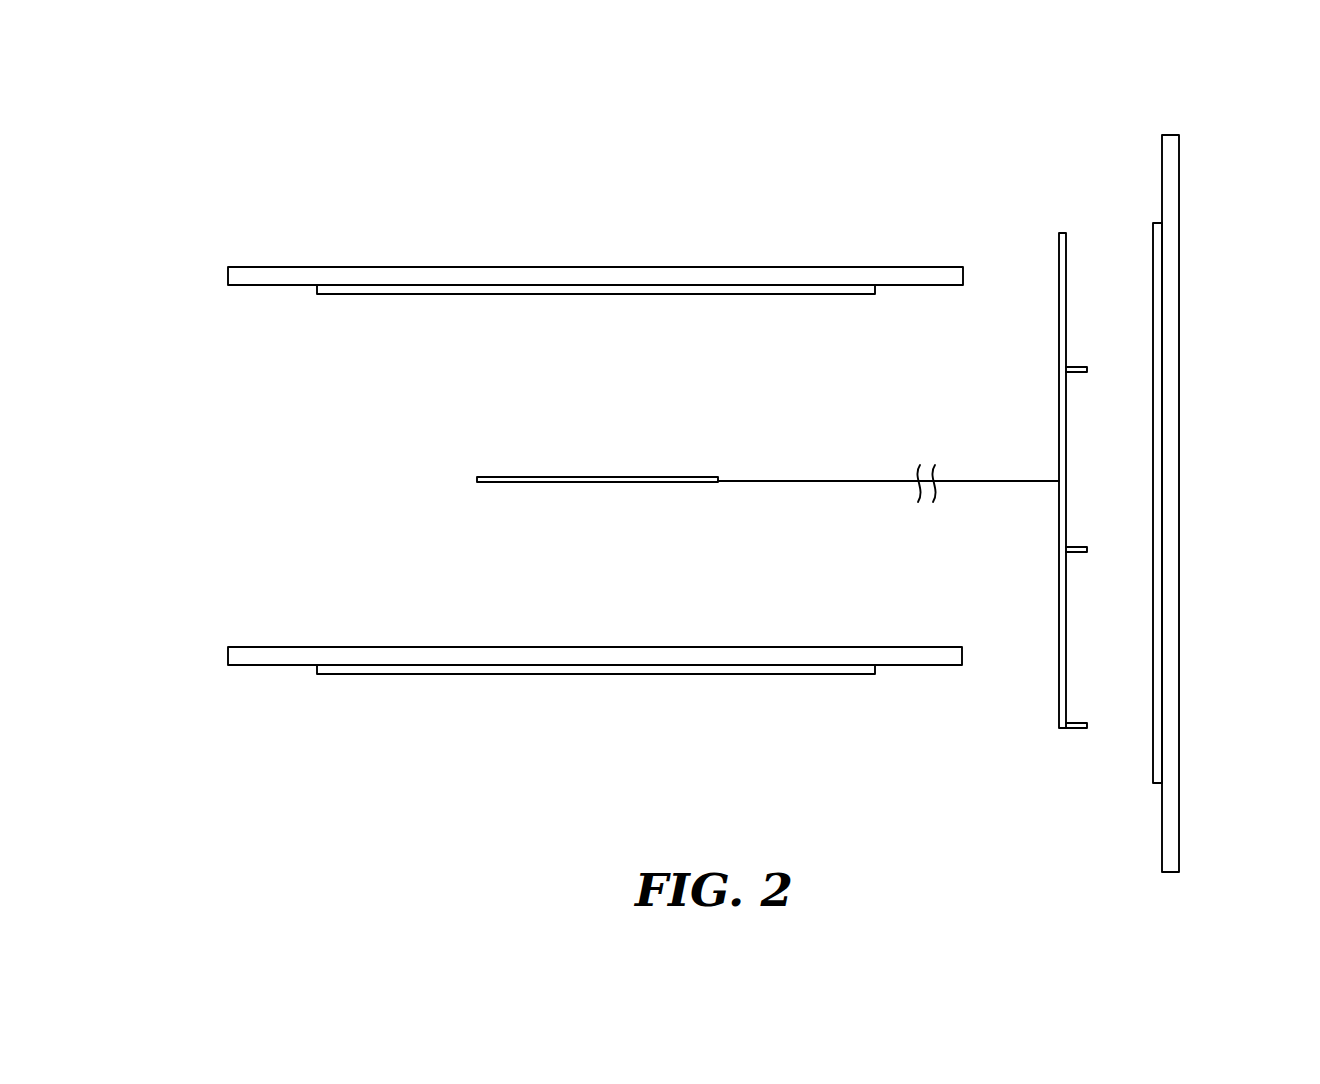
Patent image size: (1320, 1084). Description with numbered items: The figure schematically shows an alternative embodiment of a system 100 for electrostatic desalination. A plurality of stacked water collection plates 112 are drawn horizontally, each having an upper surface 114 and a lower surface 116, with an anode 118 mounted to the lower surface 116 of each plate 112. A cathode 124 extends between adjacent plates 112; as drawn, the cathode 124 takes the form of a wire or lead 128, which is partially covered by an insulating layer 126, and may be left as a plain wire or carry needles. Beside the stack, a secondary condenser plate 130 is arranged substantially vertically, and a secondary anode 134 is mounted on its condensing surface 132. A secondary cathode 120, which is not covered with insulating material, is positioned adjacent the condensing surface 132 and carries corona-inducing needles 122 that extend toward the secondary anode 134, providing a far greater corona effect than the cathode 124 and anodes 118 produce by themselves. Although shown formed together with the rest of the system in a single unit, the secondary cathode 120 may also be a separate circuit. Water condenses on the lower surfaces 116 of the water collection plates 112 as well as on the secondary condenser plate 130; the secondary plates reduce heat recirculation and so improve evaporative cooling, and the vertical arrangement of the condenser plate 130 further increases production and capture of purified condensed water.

The system 100 is at (356, 154).
The water collection plate 112 is at (228, 268).
The upper surface 114 is at (256, 244).
The lower surface 116 is at (257, 304).
The anode 118 is at (352, 294).
The secondary cathode 120 is at (1059, 690).
The corona-inducing needles 122 is at (1095, 350).
The cathode 124 is at (488, 510).
The insulating layer 126 is at (602, 477).
The wire or lead 128 is at (818, 452).
The secondary condenser plate 130 is at (1179, 810).
The condensing surface 132 is at (1110, 807).
The secondary anode 134 is at (1153, 226).